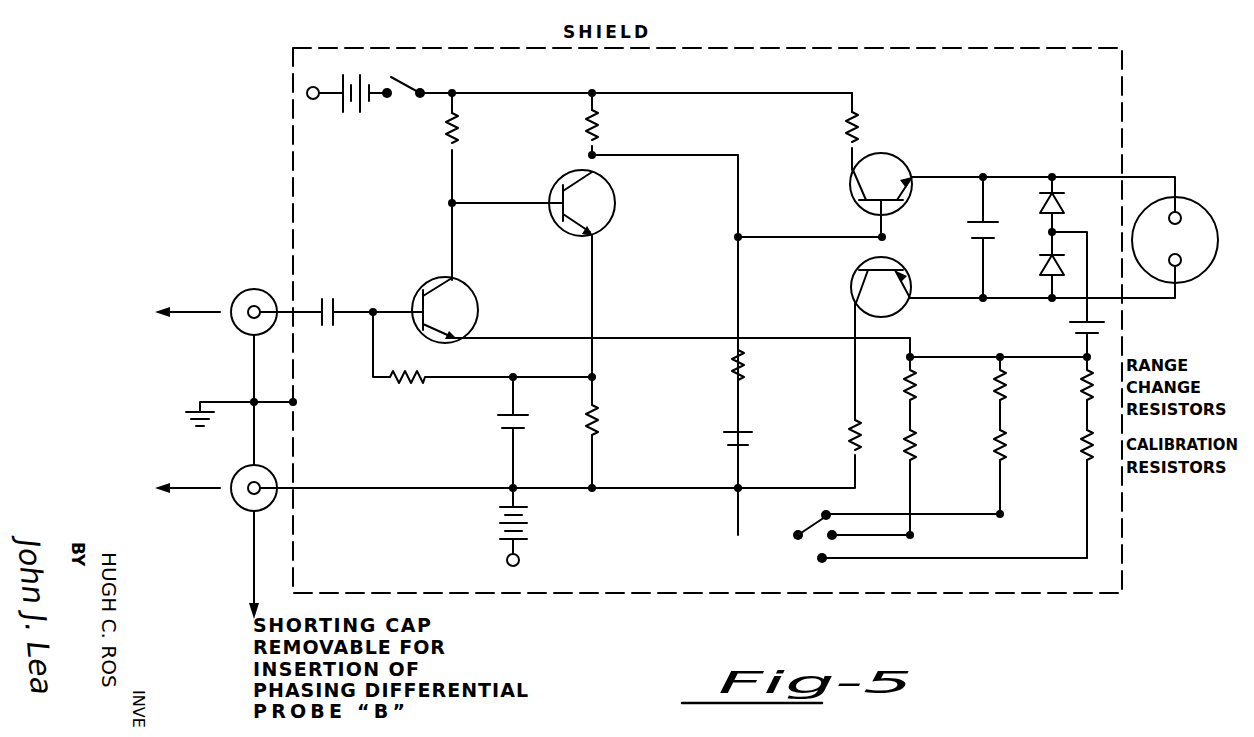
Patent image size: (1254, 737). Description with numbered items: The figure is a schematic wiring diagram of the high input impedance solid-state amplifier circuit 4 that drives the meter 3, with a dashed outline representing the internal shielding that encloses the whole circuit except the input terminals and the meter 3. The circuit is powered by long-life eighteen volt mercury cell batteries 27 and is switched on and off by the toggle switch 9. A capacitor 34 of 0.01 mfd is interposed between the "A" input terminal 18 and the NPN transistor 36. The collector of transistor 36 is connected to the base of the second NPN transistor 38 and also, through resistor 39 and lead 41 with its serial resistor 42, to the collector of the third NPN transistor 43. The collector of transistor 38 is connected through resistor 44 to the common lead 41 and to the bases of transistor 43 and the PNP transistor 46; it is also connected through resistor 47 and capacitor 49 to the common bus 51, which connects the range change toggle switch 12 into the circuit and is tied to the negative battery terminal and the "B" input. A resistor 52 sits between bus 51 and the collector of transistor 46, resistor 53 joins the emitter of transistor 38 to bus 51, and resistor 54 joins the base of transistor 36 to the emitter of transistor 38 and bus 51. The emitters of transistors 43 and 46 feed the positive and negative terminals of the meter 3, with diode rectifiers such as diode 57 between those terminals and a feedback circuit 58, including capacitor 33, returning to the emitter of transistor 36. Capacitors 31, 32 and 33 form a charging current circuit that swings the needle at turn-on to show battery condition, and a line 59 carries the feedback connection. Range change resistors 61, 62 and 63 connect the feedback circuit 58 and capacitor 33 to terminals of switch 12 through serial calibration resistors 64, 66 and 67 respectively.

The meter face 3 is at (1200, 212).
The solid-state amplifier circuit 4 is at (250, 183).
The toggle switch 9 is at (410, 79).
The range change toggle switch 12 is at (796, 546).
The input terminal 18 is at (244, 293).
The mercury cell battery 27 is at (352, 82).
The capacitor 31 is at (532, 426).
The capacitor 32 is at (969, 235).
The capacitor 33 is at (1068, 330).
The capacitor 34 is at (328, 298).
The transistor 36 is at (465, 306).
The transistor 38 is at (618, 206).
The resistor 39 is at (461, 128).
The lead 41 is at (660, 93).
The resistor 42 is at (862, 122).
The transistor 43 is at (899, 168).
The resistor 44 is at (600, 124).
The transistor 46 is at (854, 281).
The resistor 47 is at (748, 367).
The capacitor 49 is at (752, 441).
The common bus 51 is at (660, 484).
The resistor 52 is at (848, 440).
The resistor 53 is at (606, 420).
The resistor 54 is at (400, 386).
The diode rectifier 57 is at (1038, 204).
The feedback circuit 58 is at (1040, 264).
The line 59 is at (650, 338).
The range change resistor 61 is at (916, 386).
The range change resistor 62 is at (1006, 386).
The range change resistor 63 is at (1078, 392).
The calibration resistor 64 is at (916, 446).
The calibration resistor 66 is at (1006, 446).
The calibration resistor 67 is at (1078, 452).